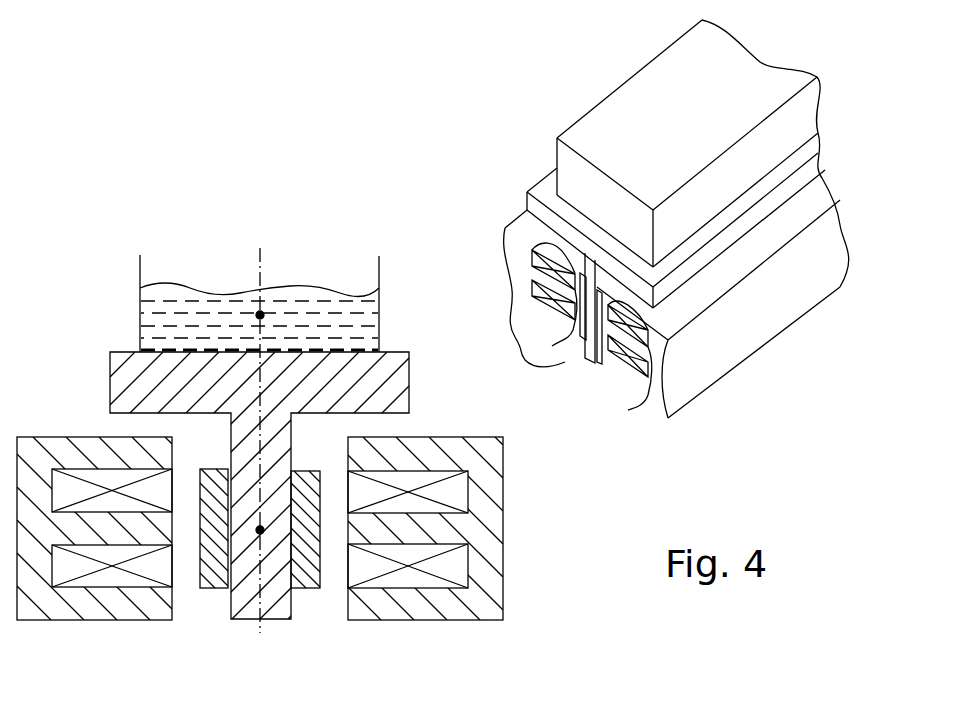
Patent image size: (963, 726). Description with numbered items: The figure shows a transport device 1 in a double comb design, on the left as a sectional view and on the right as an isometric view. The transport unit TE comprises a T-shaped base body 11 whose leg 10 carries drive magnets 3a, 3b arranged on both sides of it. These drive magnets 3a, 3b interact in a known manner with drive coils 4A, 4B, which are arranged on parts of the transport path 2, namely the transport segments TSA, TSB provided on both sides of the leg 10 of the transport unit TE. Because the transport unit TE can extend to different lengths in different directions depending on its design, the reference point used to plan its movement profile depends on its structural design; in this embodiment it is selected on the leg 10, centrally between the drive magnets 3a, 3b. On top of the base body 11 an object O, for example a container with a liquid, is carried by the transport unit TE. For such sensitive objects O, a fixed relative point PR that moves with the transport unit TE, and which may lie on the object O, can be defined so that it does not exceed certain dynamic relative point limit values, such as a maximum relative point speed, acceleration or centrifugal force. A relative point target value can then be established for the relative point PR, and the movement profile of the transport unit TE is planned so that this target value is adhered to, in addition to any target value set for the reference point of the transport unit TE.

The base body 11 is at (123, 347).
The transport unit TE is at (275, 588).
The object O is at (380, 272).
The relative point PR is at (262, 313).
The transport segment TSB is at (472, 180).
The transport segment TSA is at (730, 432).
The drive coil 4B is at (85, 492).
The drive coil 4A is at (450, 572).
The drive magnet 3b is at (215, 545).
The drive magnet 3a is at (305, 560).
The leg 10 is at (247, 625).
The transport device 1 is at (531, 672).
The transport path 2 is at (481, 634).